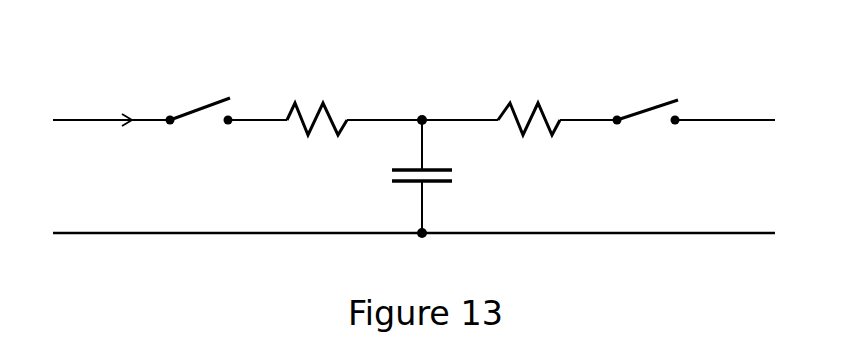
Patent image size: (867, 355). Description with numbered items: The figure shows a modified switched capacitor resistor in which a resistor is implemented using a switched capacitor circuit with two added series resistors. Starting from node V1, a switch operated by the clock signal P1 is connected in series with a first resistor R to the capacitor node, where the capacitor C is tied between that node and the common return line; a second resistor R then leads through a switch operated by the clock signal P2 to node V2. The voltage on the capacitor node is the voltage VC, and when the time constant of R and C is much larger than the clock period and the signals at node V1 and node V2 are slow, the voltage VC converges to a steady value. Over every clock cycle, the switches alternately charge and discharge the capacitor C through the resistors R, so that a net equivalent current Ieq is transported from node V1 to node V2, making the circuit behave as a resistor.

The node V1 is at (76, 99).
The equivalent current Ieq is at (122, 144).
The clock signal P1 is at (200, 90).
The resistor R is at (423, 102).
The voltage VC is at (423, 97).
The capacitor C is at (424, 179).
The clock signal P2 is at (648, 88).
The node V2 is at (752, 100).